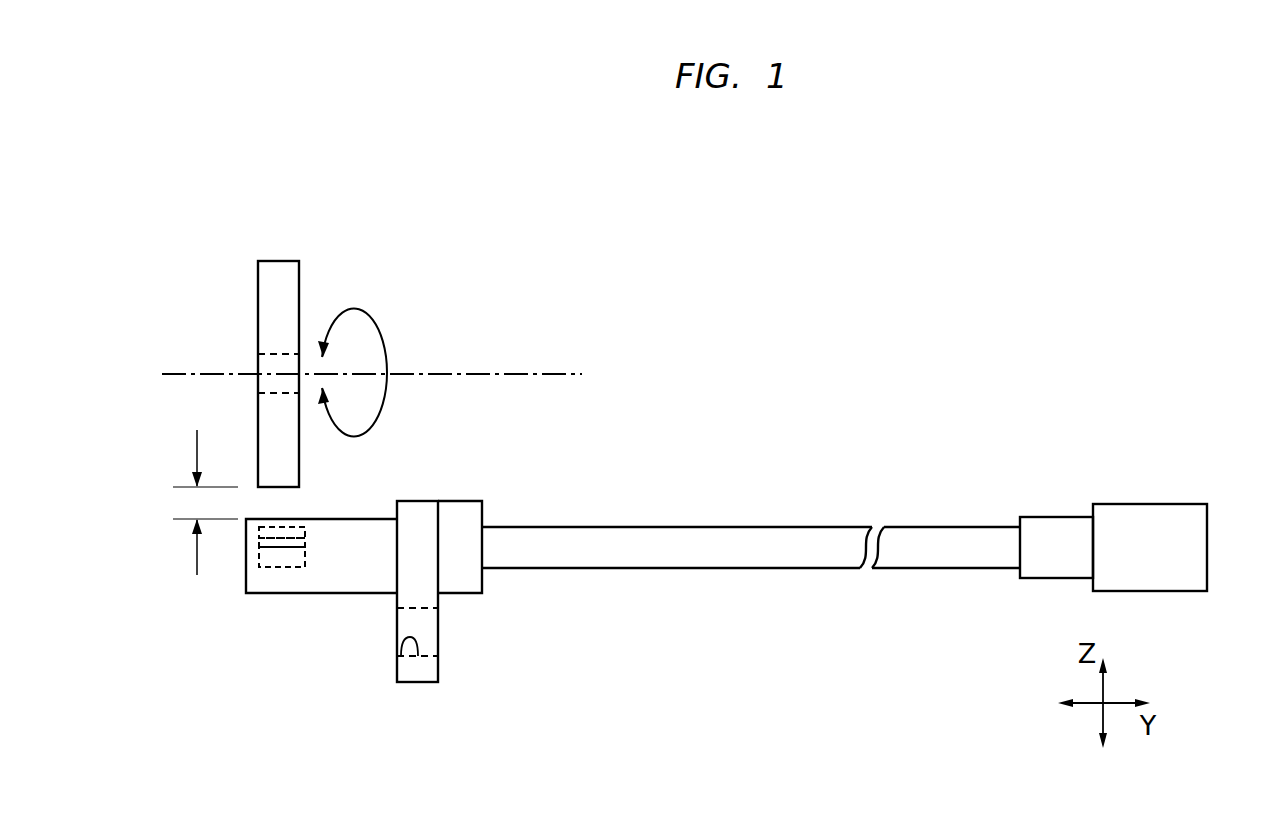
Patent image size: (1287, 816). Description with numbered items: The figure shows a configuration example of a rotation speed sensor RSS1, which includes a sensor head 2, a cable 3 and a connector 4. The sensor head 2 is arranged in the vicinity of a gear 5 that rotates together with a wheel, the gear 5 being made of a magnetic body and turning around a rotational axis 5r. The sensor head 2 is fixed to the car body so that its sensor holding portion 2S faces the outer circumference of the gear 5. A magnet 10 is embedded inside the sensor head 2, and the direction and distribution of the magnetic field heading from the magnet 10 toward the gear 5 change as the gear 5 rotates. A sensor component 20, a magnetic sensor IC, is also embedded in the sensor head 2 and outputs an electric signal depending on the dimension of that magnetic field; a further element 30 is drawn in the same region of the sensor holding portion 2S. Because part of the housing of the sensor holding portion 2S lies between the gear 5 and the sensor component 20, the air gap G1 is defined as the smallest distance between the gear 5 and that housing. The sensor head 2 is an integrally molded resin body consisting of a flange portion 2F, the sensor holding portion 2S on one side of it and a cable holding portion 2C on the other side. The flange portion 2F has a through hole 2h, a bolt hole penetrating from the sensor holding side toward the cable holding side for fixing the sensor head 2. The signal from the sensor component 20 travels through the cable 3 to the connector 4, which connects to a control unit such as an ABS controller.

The sensor head 2 is at (396, 633).
The sensor holding portion 2S is at (256, 588).
The flange portion 2F is at (428, 678).
The cable holding portion 2C is at (465, 577).
The through hole 2h is at (403, 651).
The cable 3 is at (713, 606).
The connector 4 is at (1137, 469).
The gear 5 is at (286, 282).
The rotational axis 5r is at (506, 373).
The magnet 10 is at (307, 565).
The sensor component 20 is at (307, 531).
The intermediate element 30 is at (258, 541).
The air gap G1 is at (197, 503).
The rotation speed sensor RSS1 is at (812, 728).